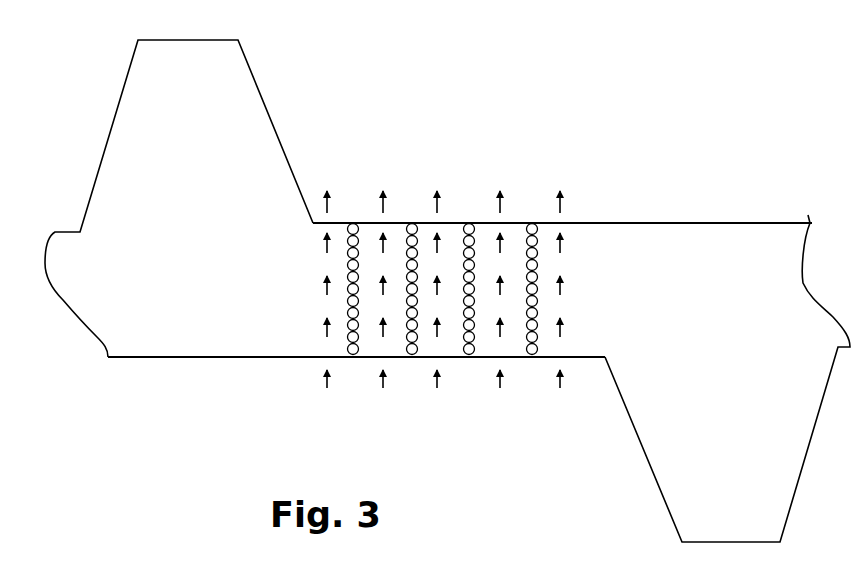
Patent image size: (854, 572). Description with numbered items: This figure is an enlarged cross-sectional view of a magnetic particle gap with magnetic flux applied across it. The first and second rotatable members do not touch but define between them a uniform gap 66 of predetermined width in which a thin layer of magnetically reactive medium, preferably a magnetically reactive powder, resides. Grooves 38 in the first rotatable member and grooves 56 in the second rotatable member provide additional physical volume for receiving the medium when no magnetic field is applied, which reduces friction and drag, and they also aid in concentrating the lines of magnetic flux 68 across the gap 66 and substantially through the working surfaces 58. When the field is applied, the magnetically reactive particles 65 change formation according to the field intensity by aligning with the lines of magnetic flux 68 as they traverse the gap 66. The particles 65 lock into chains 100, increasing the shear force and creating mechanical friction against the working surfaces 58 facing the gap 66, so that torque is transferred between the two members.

The grooves 38 is at (273, 120).
The grooves 56 is at (650, 467).
The working surfaces 58 is at (568, 223).
The magnetically reactive particles 65 is at (532, 223).
The gap 66 is at (731, 265).
The lines of magnetic flux 68 is at (382, 382).
The chains 100 is at (358, 283).